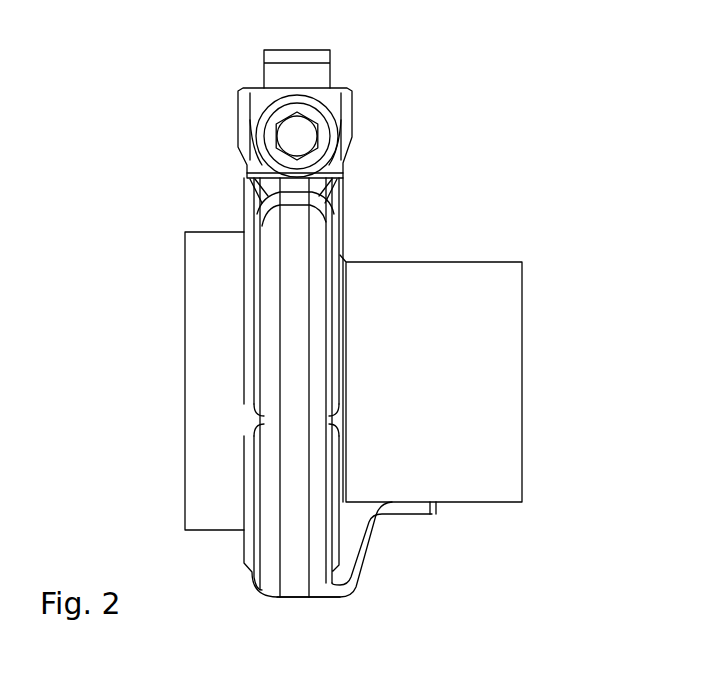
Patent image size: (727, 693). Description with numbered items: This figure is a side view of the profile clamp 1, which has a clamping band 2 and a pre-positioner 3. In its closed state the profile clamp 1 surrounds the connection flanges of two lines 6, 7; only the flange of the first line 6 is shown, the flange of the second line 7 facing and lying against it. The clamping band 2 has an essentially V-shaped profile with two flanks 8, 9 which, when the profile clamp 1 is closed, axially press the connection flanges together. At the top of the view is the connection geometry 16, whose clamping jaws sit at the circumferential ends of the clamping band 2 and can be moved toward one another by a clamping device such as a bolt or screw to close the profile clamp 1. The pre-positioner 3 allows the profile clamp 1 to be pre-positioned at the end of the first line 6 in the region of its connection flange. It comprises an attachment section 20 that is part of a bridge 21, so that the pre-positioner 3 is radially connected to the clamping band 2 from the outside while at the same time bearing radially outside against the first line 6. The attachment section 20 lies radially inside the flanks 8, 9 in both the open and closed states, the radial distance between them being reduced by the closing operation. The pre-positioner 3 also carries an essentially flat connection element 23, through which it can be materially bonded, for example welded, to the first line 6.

The profile clamp 1 is at (422, 155).
The clamping band 2 is at (289, 235).
The pre-positioner 3 is at (362, 600).
The first line 6 is at (472, 278).
The second line 7 is at (203, 274).
The flank 8 is at (337, 243).
The flank 9 is at (247, 532).
The connection geometry 16 is at (224, 107).
The attachment section 20 is at (378, 577).
The bridge 21 is at (367, 550).
The connection element 23 is at (432, 515).